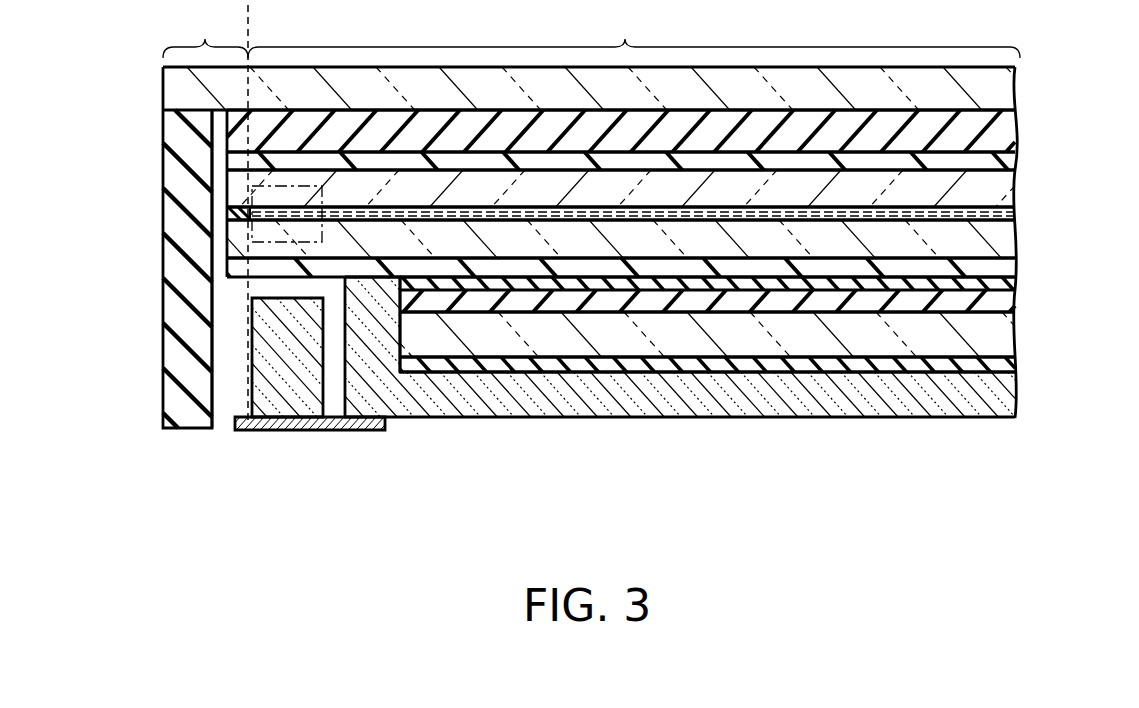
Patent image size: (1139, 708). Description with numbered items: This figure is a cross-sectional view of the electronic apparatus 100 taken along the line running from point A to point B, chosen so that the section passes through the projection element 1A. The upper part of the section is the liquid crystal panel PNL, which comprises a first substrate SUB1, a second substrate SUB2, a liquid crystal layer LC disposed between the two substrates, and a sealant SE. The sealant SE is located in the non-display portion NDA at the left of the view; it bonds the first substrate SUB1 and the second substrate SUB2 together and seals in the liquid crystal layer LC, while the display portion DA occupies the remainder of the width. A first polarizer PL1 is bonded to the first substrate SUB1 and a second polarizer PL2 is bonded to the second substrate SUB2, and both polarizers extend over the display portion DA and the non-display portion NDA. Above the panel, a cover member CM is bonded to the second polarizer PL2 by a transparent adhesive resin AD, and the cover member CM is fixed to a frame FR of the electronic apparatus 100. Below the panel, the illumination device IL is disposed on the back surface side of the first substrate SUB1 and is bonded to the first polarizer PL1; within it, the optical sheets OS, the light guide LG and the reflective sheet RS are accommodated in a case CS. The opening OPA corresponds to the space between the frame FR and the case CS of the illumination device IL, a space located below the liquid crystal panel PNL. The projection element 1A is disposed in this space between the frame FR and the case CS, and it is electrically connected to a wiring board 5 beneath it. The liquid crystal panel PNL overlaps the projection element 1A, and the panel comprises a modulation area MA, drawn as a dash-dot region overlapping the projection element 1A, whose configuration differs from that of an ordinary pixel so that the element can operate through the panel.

The non-display portion NDA is at (205, 36).
The display portion DA is at (634, 212).
The cover member CM is at (1000, 86).
The transparent adhesive resin AD is at (1000, 128).
The second polarizer PL2 is at (1000, 158).
The second substrate SUB2 is at (1000, 183).
The liquid crystal layer LC is at (1003, 211).
The sealant SE is at (238, 214).
The first substrate SUB1 is at (1000, 240).
The first polarizer PL1 is at (1000, 265).
The optical sheets OS is at (1010, 284).
The light guide LG is at (1000, 333).
The reflective sheet RS is at (1000, 362).
The case CS is at (1000, 393).
The frame FR is at (168, 232).
The opening OPA is at (236, 375).
The modulation area MA is at (266, 243).
The projection element 1A is at (280, 392).
The wiring board 5 is at (360, 430).
The electronic apparatus 100 is at (607, 458).
The illumination device IL is at (740, 420).
The liquid crystal panel PNL is at (836, 238).
The line A-B end point A is at (159, 454).
The line A-B end point B is at (1019, 454).